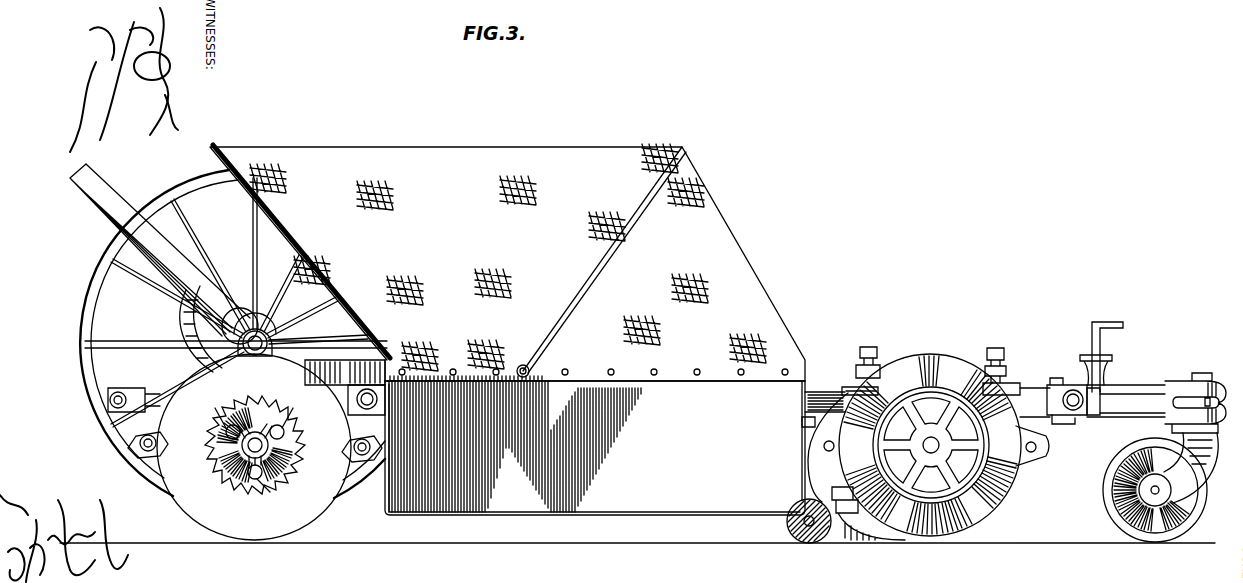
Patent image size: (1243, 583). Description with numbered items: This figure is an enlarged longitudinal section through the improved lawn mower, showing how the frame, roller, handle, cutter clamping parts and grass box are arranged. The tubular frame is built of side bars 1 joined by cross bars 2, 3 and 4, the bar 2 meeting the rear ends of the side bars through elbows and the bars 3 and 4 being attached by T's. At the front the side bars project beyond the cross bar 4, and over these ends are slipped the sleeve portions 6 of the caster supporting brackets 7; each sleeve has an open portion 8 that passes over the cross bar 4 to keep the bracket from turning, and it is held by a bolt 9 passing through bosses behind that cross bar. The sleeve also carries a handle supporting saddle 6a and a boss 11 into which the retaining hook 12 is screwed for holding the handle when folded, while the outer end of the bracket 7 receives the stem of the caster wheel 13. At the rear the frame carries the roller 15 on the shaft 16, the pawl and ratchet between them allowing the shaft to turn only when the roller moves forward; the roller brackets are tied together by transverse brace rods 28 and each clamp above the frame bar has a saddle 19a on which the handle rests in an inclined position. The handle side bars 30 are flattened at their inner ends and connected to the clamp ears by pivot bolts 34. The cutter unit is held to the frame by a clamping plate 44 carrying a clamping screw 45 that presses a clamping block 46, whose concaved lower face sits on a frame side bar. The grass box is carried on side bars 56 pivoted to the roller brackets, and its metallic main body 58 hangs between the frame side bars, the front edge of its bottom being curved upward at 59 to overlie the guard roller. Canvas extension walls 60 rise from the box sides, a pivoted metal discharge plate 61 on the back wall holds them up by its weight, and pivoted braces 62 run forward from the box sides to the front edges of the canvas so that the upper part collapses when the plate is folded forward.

The side bars 1 is at (807, 392).
The cross bar 2 is at (108, 401).
The cross bar 3 is at (368, 392).
The cross bar 4 is at (1073, 392).
The sleeve portion 6 is at (1117, 388).
The handle supporting saddle 6a is at (1112, 357).
The caster supporting bracket 7 is at (1181, 380).
The open portion 8 is at (1047, 420).
The bolt 9 is at (1054, 380).
The boss 11 is at (1095, 402).
The retaining hook 12 is at (1122, 328).
The caster wheel 13 is at (1105, 509).
The roller 15 is at (190, 512).
The shaft 16 is at (248, 450).
The saddle 19a is at (180, 327).
The transverse brace rods 28 is at (143, 450).
The side bars of the handle 30 is at (114, 207).
The pivot bolts 34 is at (258, 326).
The clamping plate 44 is at (866, 386).
The clamping screw 45 is at (872, 352).
The clamping block 46 is at (1007, 390).
The side bars 56 is at (320, 362).
The main body 58 is at (595, 448).
The curved front edge 59 is at (786, 502).
The extension walls 60 is at (507, 262).
The discharge plate 61 is at (268, 218).
The pivoted braces 62 is at (590, 266).